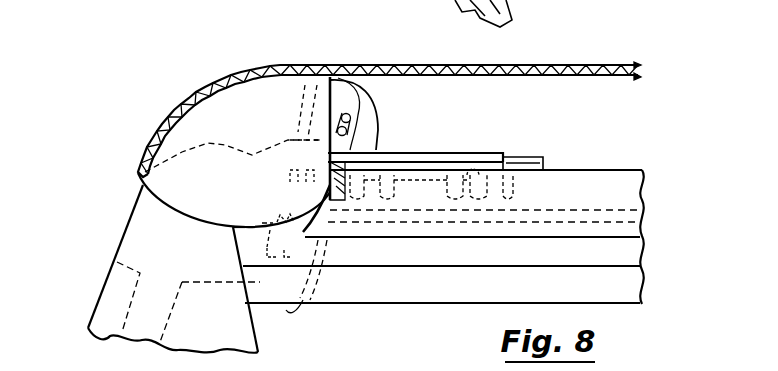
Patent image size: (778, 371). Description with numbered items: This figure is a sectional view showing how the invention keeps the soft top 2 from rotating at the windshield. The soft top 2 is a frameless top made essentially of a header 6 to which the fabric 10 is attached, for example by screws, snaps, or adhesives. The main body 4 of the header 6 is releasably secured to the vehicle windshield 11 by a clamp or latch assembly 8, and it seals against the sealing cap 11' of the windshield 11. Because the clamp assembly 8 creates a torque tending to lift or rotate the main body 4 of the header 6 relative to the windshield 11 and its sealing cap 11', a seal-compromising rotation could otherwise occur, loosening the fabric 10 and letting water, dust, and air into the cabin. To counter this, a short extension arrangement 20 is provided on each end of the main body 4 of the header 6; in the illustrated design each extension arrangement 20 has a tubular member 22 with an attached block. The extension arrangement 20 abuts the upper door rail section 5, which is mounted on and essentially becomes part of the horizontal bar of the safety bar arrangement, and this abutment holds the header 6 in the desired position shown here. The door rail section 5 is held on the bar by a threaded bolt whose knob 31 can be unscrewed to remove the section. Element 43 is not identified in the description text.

The soft top 2 is at (560, 65).
The main body of the header 4 is at (234, 121).
The upper door rail section 5 is at (600, 184).
The header 6 is at (210, 126).
The clamp or latch assembly 8 is at (326, 283).
The fabric 10 is at (408, 63).
The vehicle windshield 11 is at (149, 246).
The sealing cap 11' is at (233, 158).
The extension arrangement 20 is at (477, 141).
The tubular member 22 is at (420, 152).
The knob 31 is at (525, 155).
The fragment 43 is at (684, 4).